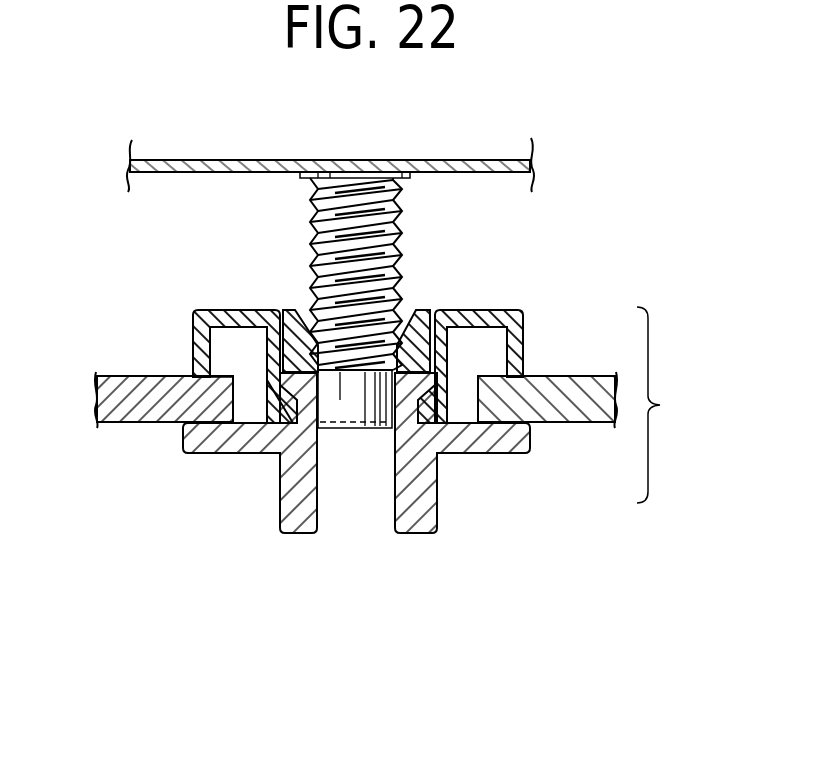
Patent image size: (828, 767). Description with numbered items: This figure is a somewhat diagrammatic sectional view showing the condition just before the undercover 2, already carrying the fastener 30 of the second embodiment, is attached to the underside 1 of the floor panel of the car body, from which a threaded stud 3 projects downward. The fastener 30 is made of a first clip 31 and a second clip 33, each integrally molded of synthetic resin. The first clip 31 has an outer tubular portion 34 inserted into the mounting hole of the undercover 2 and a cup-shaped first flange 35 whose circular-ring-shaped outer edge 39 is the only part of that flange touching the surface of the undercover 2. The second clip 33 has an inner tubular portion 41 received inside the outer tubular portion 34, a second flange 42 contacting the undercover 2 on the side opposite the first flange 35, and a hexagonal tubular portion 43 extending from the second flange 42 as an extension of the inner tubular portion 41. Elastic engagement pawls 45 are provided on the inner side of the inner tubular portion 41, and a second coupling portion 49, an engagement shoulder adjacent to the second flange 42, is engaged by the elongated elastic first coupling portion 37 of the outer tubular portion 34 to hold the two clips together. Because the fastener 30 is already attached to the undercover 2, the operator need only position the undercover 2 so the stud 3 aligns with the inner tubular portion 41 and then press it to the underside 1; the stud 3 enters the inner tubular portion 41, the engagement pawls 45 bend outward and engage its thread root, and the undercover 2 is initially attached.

The underside of the floor panel 1 is at (492, 158).
The undercover 2 is at (96, 405).
The stud 3 is at (308, 228).
The fastener 30 is at (660, 405).
The first clip 31 is at (374, 336).
The second clip 33 is at (375, 453).
The outer tubular portion 34 is at (193, 340).
The first flange 35 is at (240, 312).
The first coupling portion 37 is at (270, 452).
The outer edge 39 is at (205, 386).
The inner tubular portion 41 is at (321, 428).
The second flange 42 is at (188, 446).
The polygonal tubular portion 43 is at (278, 514).
The elastic engagement pawl 45 is at (292, 312).
The second coupling portion 49 is at (444, 455).